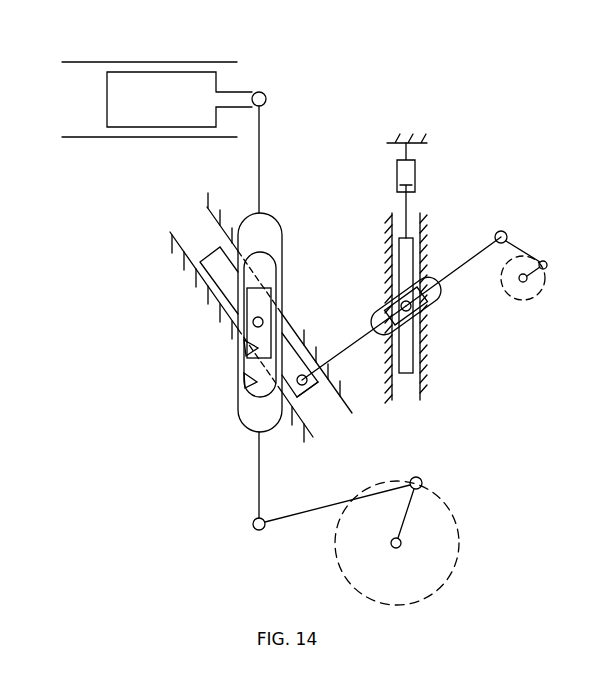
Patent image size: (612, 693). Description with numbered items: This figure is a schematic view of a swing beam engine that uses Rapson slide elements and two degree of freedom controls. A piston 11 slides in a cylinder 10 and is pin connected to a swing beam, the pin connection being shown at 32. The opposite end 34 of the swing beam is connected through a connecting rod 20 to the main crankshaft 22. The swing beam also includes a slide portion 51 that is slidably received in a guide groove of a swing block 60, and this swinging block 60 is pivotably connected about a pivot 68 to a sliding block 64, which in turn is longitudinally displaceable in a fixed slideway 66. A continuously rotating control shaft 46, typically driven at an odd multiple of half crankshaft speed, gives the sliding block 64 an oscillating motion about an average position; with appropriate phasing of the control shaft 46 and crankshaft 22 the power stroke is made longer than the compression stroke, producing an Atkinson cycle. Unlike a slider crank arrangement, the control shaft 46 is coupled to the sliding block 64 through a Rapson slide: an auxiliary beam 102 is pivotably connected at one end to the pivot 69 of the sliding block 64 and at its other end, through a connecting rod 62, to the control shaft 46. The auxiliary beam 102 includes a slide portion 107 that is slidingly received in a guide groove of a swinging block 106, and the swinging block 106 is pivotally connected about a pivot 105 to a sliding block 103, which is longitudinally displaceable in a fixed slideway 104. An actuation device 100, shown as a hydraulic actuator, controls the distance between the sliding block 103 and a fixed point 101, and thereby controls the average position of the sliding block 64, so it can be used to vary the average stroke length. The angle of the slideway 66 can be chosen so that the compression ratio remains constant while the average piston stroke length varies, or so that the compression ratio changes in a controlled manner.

The cylinder 10 is at (135, 62).
The piston 11 is at (197, 80).
The pivot pin 32 is at (266, 97).
The connecting rod 20 is at (317, 512).
The main crankshaft 22 is at (405, 522).
The opposite end of the swing beam 34 is at (252, 527).
The control shaft 46 is at (546, 269).
The slide portion 51 is at (250, 388).
The swing block 60 is at (258, 348).
The connecting rod 62 is at (507, 234).
The sliding block 64 is at (213, 270).
The fixed slideway 66 is at (183, 249).
The pivot 68 is at (253, 324).
The pivot 69 is at (301, 397).
The actuation device 100 is at (417, 177).
The fixed point 101 is at (427, 142).
The auxiliary beam 102 is at (467, 263).
The sliding block 103 is at (404, 375).
The fixed slideway 104 is at (422, 342).
The pivot 105 is at (396, 297).
The swinging block 106 is at (383, 300).
The slide portion 107 is at (370, 316).